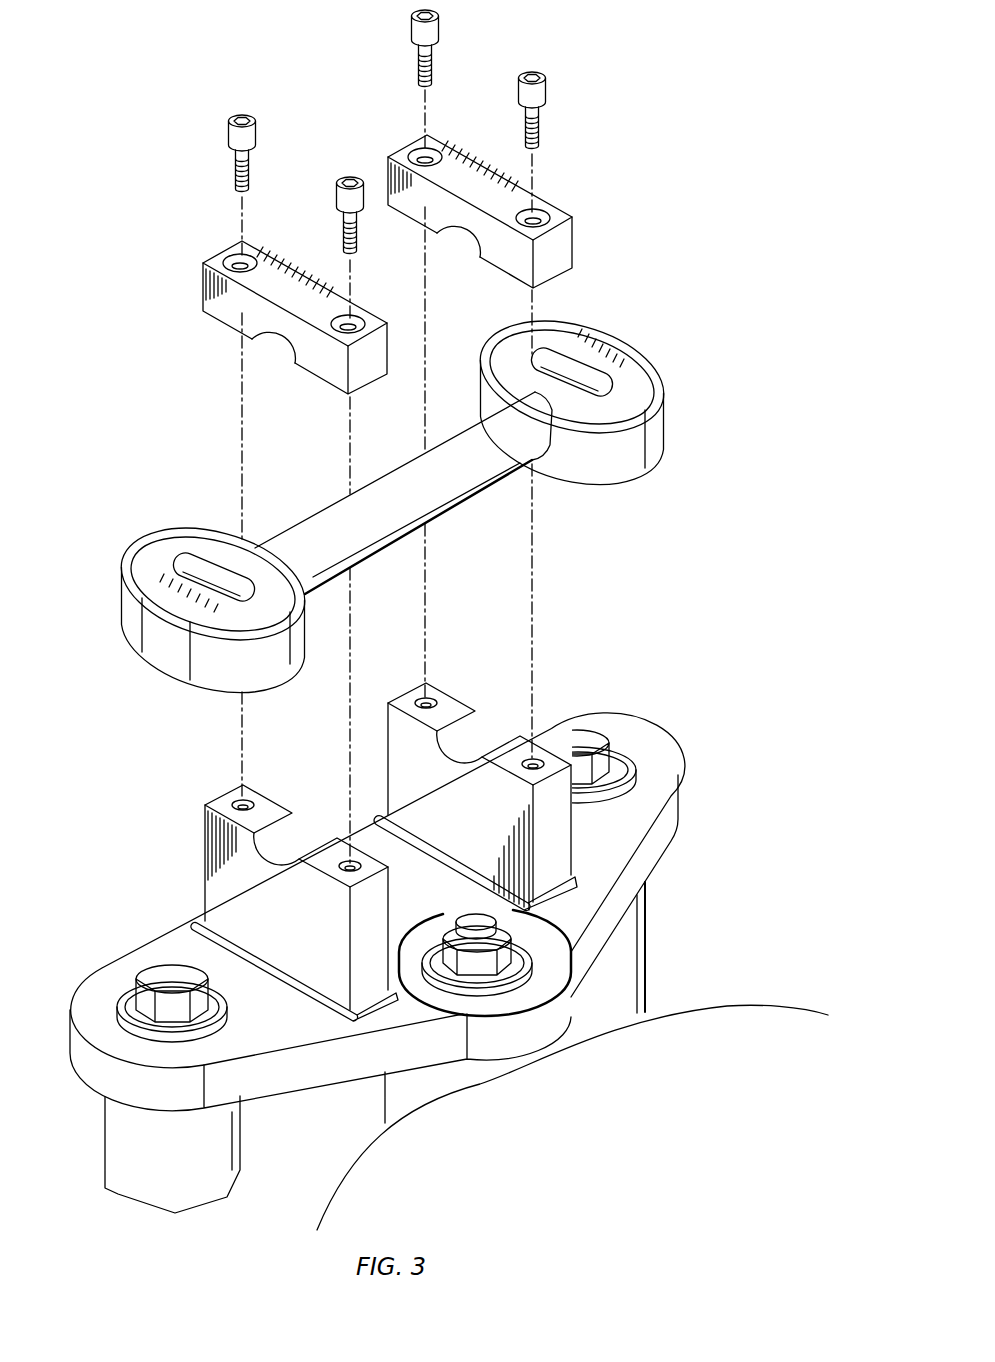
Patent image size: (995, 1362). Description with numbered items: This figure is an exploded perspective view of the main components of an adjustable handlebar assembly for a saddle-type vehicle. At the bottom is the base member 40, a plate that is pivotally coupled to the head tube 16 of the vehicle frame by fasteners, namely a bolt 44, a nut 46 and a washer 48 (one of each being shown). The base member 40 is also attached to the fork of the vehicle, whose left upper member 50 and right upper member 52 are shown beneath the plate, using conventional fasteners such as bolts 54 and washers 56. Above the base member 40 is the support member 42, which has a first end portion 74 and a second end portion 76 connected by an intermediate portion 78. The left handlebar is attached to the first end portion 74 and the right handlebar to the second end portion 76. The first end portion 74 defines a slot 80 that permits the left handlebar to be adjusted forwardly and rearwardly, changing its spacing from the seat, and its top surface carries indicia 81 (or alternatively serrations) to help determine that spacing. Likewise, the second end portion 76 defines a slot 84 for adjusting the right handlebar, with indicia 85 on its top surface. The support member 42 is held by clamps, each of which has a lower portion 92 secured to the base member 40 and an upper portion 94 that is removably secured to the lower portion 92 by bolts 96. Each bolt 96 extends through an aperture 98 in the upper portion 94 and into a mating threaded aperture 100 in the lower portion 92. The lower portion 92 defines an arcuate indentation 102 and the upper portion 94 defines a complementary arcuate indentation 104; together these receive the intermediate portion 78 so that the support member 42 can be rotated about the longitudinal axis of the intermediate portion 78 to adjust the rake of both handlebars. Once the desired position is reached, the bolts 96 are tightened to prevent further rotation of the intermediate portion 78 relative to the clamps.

The head tube 16 is at (460, 1072).
The base member 40 is at (652, 853).
The support member 42 is at (674, 421).
The bolt 44 is at (476, 916).
The nut 46 is at (436, 948).
The washer 48 is at (547, 933).
The left upper member 50 is at (100, 1135).
The right upper member 52 is at (648, 966).
The bolt 54 is at (165, 972).
The washer 56 is at (100, 1012).
The first end portion 74 is at (125, 610).
The second end portion 76 is at (618, 470).
The intermediate portion 78 is at (410, 470).
The slot 80 is at (192, 558).
The indicia 81 is at (151, 568).
The slot 84 is at (552, 352).
The indicia 85 is at (604, 342).
The lower portion 92 is at (560, 828).
The upper portion 94 is at (565, 245).
The bolt 96 is at (411, 44).
The aperture 98 is at (412, 152).
The threaded aperture 100 is at (430, 698).
The arcuate indentation 102 is at (475, 732).
The arcuate indentation 104 is at (466, 248).